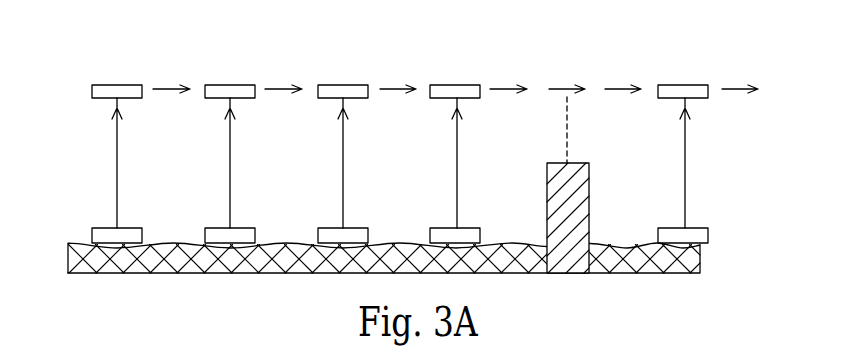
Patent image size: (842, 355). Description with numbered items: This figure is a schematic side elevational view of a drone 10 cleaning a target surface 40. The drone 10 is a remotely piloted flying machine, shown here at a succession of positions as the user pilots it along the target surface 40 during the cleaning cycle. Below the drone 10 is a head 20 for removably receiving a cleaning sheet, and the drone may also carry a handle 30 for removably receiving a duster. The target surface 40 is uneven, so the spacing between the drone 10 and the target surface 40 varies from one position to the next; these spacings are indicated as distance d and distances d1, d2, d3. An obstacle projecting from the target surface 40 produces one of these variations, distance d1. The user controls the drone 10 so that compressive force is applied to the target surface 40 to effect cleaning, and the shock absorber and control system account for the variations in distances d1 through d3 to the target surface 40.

The drone 10 is at (115, 73).
The head 20 is at (98, 227).
The handle 30 is at (384, 258).
The target surface 40 is at (625, 247).
The distance to the target surface d is at (230, 138).
The distance to the target surface d1 is at (567, 132).
The distance to the target surface d2 is at (457, 163).
The distance to the target surface d3 is at (685, 163).